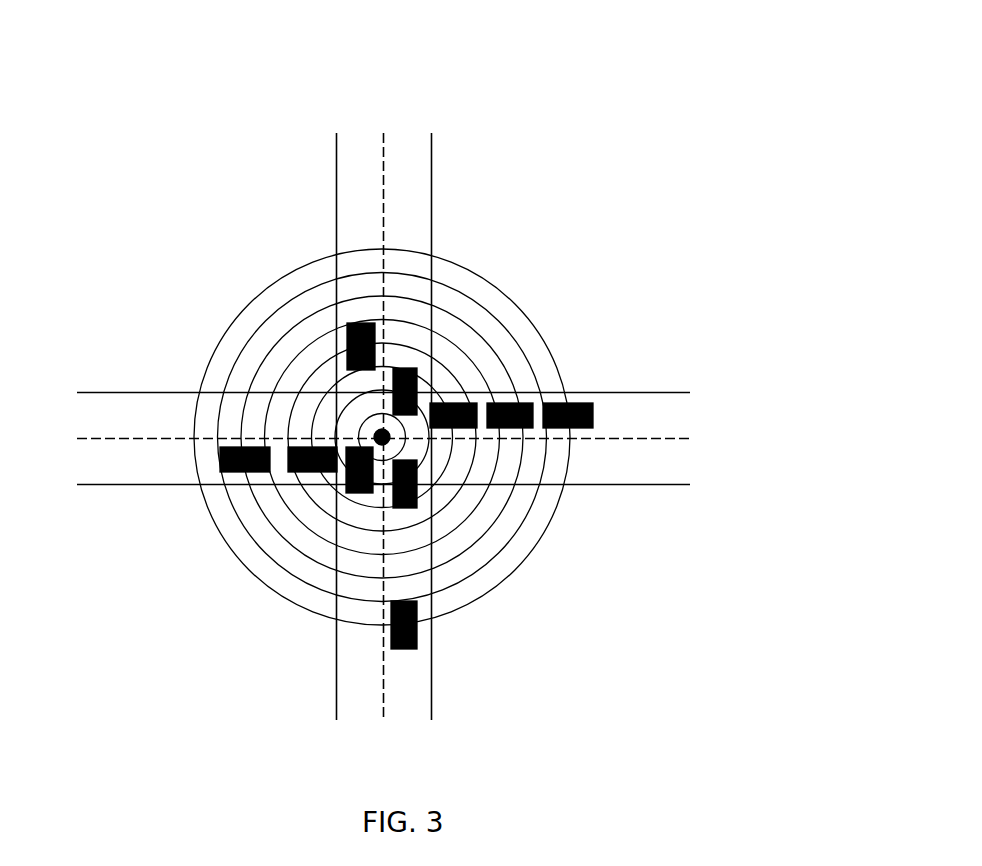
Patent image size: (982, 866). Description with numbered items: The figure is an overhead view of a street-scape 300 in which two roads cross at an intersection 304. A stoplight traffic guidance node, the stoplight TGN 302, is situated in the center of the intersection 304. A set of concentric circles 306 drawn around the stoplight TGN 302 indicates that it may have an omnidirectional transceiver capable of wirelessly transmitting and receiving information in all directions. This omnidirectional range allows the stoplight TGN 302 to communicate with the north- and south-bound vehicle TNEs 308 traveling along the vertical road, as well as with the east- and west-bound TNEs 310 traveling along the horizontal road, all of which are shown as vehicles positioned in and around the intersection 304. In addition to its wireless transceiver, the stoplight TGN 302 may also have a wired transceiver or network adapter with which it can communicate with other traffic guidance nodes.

The street-scape 300 is at (735, 87).
The stoplight TGN 302 is at (382, 437).
The intersection 304 is at (246, 530).
The concentric circles 306 is at (518, 568).
The north- and south-bound vehicle TNEs 308 is at (347, 337).
The east- and west-bound TNEs 310 is at (573, 403).